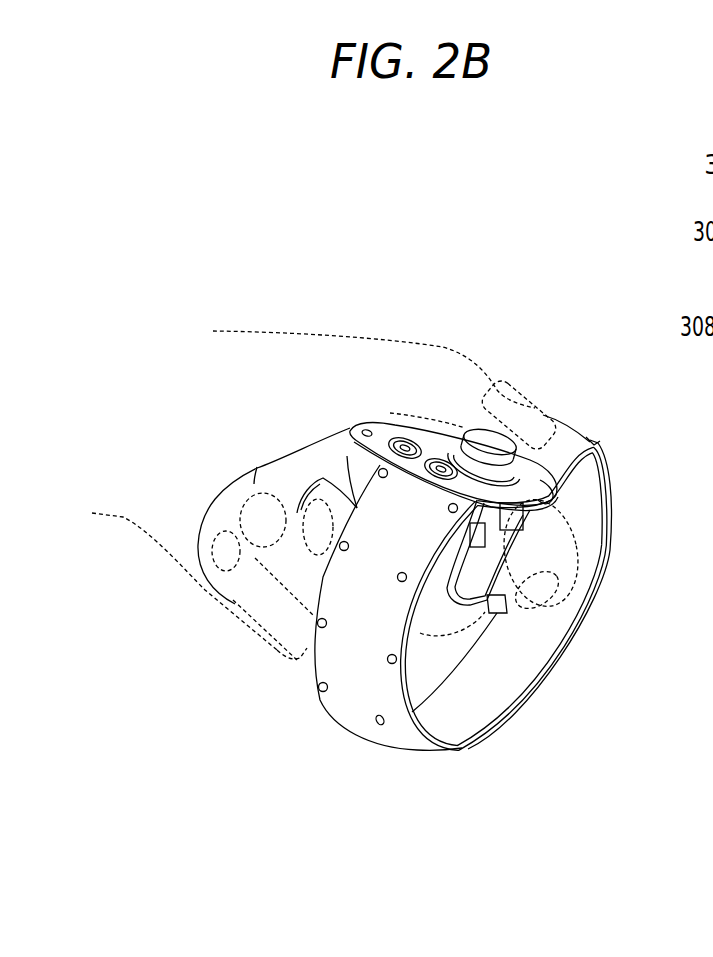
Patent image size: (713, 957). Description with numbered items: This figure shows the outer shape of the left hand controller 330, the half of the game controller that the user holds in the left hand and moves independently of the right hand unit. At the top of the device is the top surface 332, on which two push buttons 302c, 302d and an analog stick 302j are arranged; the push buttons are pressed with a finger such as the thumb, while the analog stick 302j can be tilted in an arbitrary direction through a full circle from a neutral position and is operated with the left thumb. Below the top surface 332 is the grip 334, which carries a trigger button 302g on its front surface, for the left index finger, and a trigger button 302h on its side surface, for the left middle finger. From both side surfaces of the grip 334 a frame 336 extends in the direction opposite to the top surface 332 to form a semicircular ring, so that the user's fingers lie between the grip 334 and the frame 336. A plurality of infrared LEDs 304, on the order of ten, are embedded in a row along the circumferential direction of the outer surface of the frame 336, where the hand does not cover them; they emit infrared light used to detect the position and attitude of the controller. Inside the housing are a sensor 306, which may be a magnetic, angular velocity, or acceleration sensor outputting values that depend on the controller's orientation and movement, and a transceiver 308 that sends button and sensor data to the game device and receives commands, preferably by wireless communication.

The left hand controller 330 is at (318, 243).
The grip 334 is at (254, 482).
The infrared LED 304 is at (323, 478).
The push button 302d is at (403, 440).
The push button 302c is at (441, 460).
The analog stick 302j is at (505, 440).
The top surface 332 is at (552, 490).
The sensor 306 is at (524, 520).
The transceiver 308 is at (494, 550).
The trigger button 302h is at (297, 513).
The frame 336 is at (545, 637).
The trigger button 302g is at (504, 614).